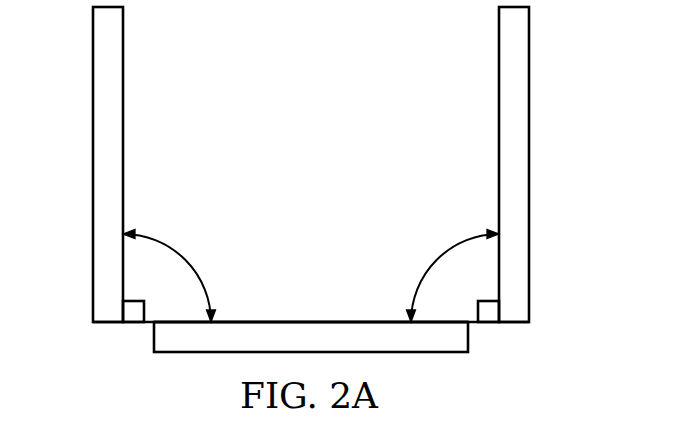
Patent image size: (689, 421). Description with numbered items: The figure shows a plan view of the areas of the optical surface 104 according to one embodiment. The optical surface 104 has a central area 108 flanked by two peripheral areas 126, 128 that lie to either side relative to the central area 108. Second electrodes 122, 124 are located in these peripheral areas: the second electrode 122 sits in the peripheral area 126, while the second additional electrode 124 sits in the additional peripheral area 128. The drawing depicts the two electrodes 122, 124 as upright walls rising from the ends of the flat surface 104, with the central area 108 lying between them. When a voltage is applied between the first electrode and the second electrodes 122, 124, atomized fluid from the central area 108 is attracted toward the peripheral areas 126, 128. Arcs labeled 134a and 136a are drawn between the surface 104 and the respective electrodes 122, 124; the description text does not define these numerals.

The optical surface 104 is at (446, 342).
The central area 108 is at (292, 290).
The second electrode 122 is at (92, 163).
The second additional electrode 124 is at (530, 163).
The peripheral area 126 is at (175, 174).
The additional peripheral area 128 is at (447, 173).
The first angle 134a is at (210, 243).
The second angle 136a is at (433, 257).